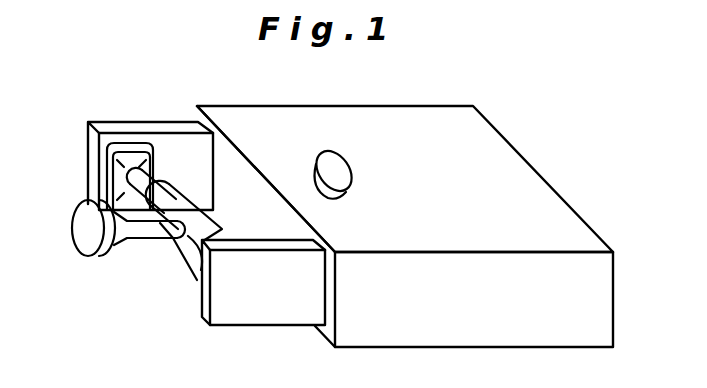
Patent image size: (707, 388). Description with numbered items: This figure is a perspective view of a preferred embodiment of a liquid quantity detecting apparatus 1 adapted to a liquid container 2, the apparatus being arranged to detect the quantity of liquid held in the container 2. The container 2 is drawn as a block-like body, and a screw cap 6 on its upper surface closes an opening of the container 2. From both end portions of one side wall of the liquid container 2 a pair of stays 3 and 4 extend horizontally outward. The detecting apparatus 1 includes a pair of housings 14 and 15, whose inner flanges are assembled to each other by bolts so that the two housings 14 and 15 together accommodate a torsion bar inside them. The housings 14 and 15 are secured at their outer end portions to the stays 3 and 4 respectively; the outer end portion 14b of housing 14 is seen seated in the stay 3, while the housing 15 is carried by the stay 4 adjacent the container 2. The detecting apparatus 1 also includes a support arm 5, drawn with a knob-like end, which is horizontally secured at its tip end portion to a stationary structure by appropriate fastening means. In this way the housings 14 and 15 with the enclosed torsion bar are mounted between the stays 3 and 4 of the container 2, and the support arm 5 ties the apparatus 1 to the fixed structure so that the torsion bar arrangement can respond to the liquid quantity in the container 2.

The liquid quantity detecting apparatus 1 is at (188, 258).
The liquid container 2 is at (603, 303).
The stay 3 is at (162, 145).
The stay 4 is at (242, 315).
The support arm 5 is at (138, 234).
The screw cap 6 is at (337, 170).
The housing 14 is at (168, 191).
The outer end portion 14b is at (116, 156).
The housing 15 is at (219, 228).